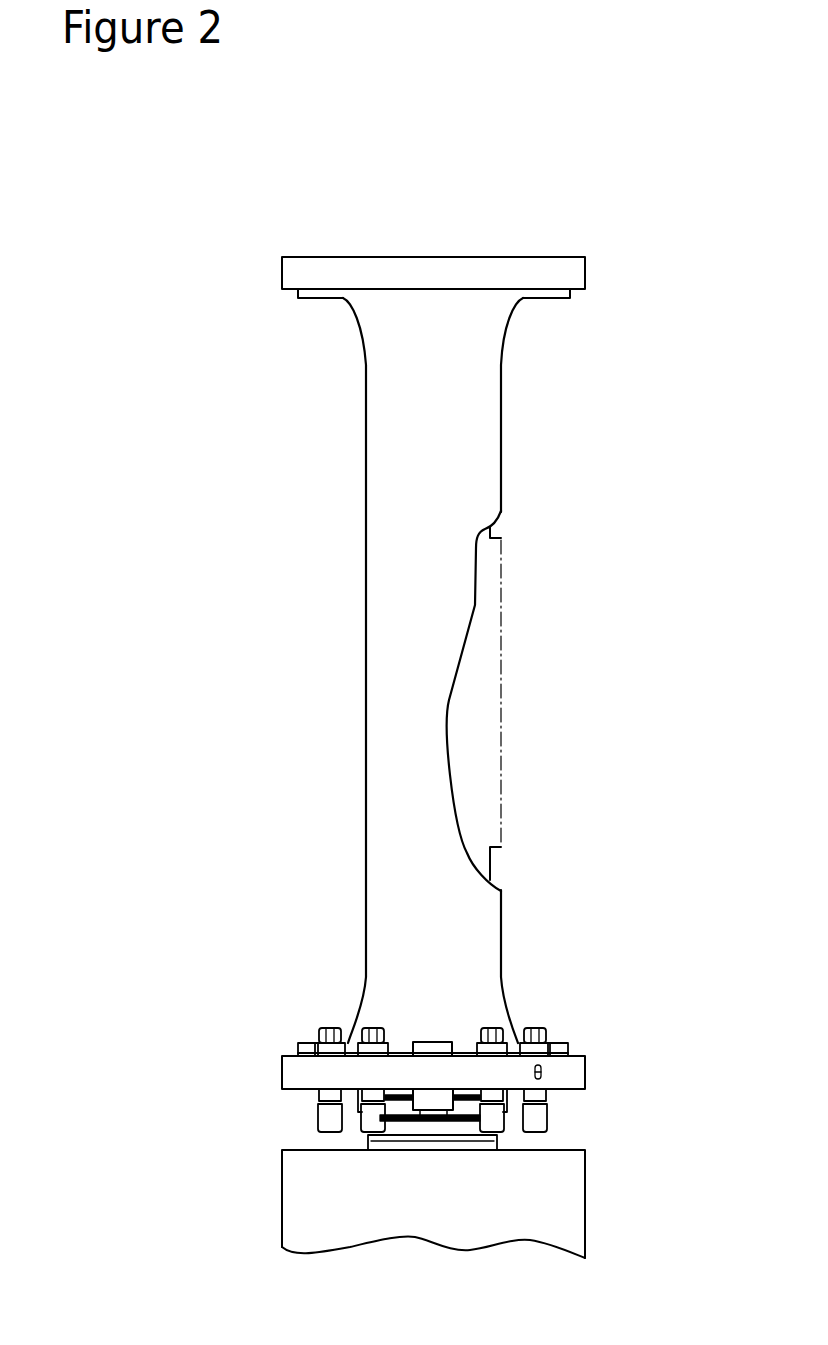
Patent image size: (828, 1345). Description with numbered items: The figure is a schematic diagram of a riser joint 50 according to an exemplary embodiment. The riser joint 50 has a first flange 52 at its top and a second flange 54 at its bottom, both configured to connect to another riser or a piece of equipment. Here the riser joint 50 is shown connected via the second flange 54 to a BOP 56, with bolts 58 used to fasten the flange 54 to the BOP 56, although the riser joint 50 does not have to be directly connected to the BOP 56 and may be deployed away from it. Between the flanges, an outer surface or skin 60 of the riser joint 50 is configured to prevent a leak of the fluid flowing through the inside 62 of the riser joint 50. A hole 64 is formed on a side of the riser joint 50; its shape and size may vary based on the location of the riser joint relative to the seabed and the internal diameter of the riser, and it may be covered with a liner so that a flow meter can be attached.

The riser joint 50 is at (444, 169).
The first flange 52 is at (292, 271).
The second flange 54 is at (293, 1070).
The BOP 56 is at (572, 1190).
The bolts 58 is at (538, 1030).
The outer surface or skin 60 is at (388, 835).
The inside 62 is at (461, 736).
The hole 64 is at (482, 645).